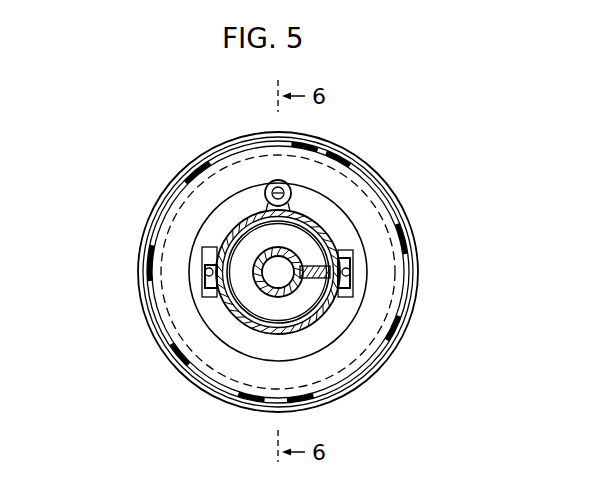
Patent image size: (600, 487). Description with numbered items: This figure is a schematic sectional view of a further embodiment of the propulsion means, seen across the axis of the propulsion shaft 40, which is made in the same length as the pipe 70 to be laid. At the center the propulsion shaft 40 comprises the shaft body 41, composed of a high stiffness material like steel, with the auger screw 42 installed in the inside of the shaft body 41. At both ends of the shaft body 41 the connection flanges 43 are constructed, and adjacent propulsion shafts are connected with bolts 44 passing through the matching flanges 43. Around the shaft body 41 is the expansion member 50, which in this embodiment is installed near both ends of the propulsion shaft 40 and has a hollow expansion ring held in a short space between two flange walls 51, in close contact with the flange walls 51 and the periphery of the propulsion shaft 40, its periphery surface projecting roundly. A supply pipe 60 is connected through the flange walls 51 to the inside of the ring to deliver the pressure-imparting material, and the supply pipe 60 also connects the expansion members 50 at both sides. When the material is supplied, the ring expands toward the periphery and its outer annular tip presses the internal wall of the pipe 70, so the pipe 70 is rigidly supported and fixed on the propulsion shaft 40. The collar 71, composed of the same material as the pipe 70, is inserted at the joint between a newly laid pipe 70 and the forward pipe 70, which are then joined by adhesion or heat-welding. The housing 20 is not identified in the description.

The housing 20 is at (182, 173).
The propulsion shaft 40 is at (332, 315).
The shaft body 41 is at (238, 327).
The auger screw 42 is at (255, 263).
The connection flange 43 is at (207, 289).
The bolt 44 is at (205, 272).
The expansion member 50 is at (368, 311).
The flange wall 51 is at (335, 216).
The supply pipe 60 is at (270, 182).
The pipe to be laid 70 is at (401, 240).
The collar 71 is at (410, 217).